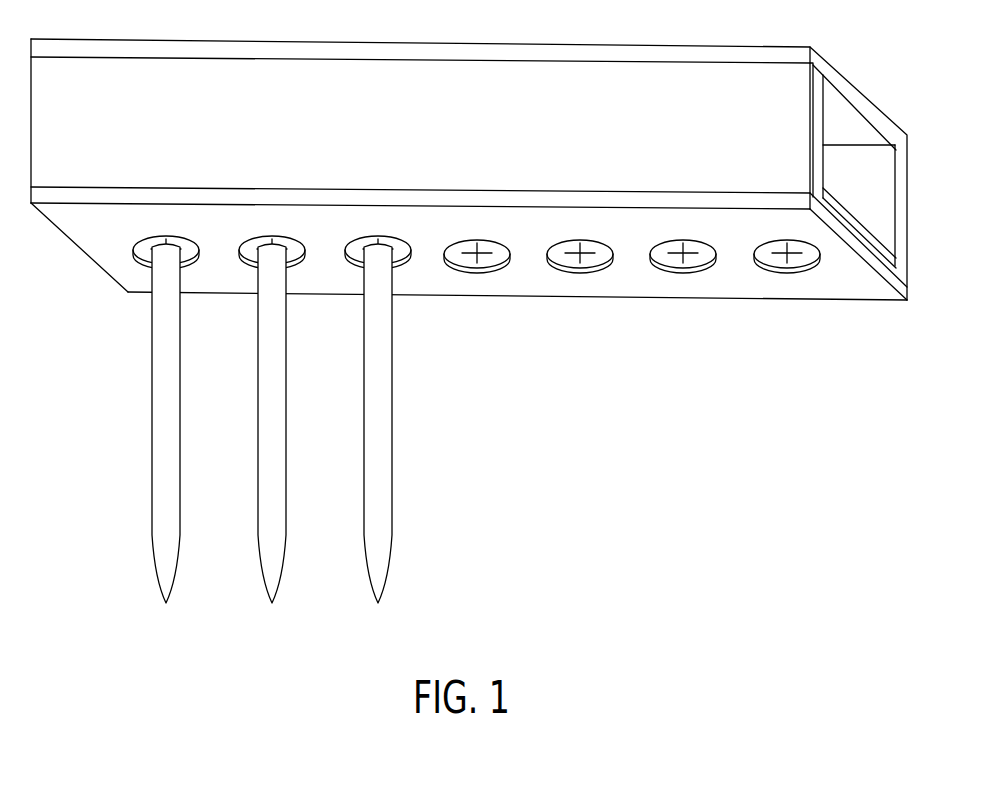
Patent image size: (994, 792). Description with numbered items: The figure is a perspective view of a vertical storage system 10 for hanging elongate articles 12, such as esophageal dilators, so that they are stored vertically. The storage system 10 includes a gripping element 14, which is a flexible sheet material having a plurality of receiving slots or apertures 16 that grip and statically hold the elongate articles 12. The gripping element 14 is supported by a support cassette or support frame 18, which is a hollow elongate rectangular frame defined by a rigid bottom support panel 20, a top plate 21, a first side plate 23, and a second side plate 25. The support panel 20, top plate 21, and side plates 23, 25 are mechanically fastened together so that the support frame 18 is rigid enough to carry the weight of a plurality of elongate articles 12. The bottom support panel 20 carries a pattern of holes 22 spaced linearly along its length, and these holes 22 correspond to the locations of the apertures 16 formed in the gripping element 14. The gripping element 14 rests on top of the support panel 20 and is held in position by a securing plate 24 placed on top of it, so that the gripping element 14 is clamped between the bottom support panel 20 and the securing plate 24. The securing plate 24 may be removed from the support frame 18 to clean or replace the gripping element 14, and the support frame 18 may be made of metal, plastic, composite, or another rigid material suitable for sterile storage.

The vertical storage system 10 is at (652, 461).
The elongate articles 12 is at (378, 503).
The gripping element 14 is at (594, 259).
The receiving slots or apertures 16 is at (476, 256).
The support frame 18 is at (70, 277).
The bottom support panel 20 is at (827, 288).
The top plate 21 is at (865, 103).
The holes 22 is at (567, 270).
The first side plate 23 is at (724, 134).
The securing plate 24 is at (873, 228).
The second side plate 25 is at (883, 185).